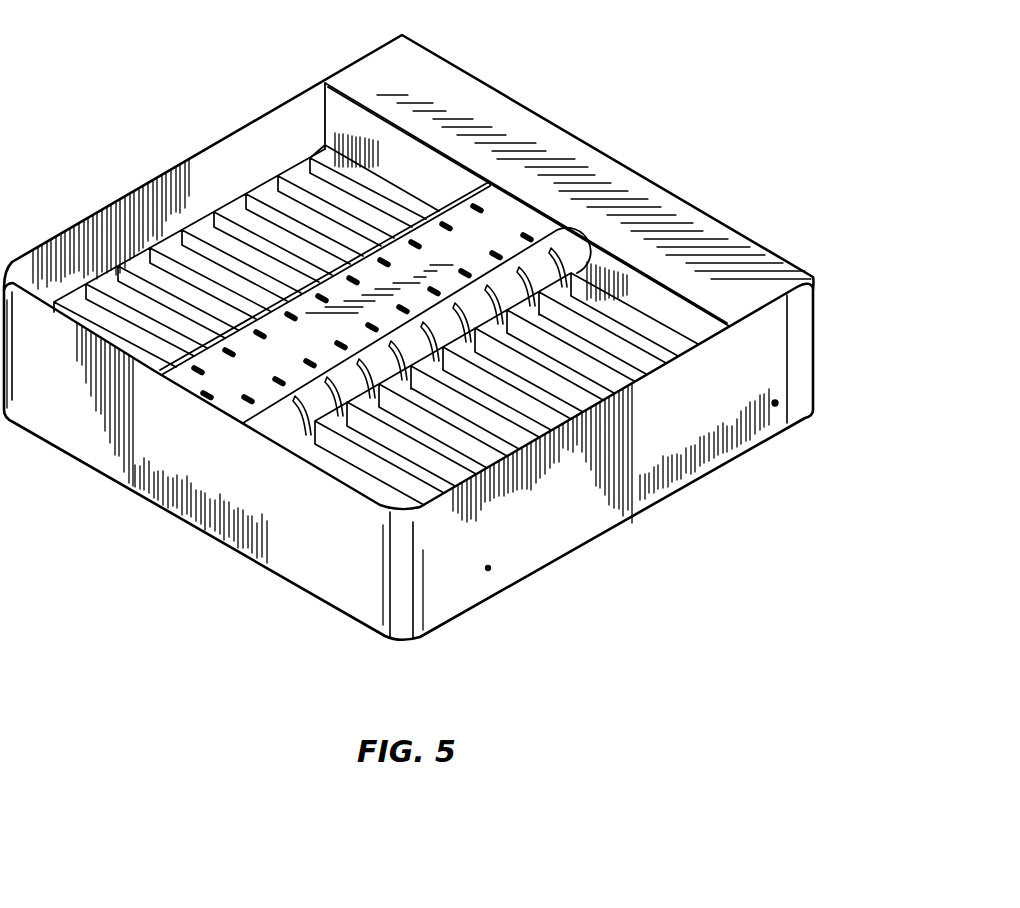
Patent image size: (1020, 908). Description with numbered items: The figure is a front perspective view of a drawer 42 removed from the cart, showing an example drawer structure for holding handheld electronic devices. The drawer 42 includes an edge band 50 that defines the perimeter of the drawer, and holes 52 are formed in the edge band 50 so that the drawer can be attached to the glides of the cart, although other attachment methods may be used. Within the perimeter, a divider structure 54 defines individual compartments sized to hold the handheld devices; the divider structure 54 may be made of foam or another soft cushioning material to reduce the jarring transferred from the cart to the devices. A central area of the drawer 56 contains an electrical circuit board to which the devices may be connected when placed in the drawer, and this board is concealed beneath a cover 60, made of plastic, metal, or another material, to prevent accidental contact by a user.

The drawer 42 is at (444, 323).
The edge band 50 is at (545, 522).
The holes 52 is at (777, 403).
The divider structure 54 is at (605, 287).
The central area of the drawer 56 is at (523, 197).
The cover 60 is at (250, 368).